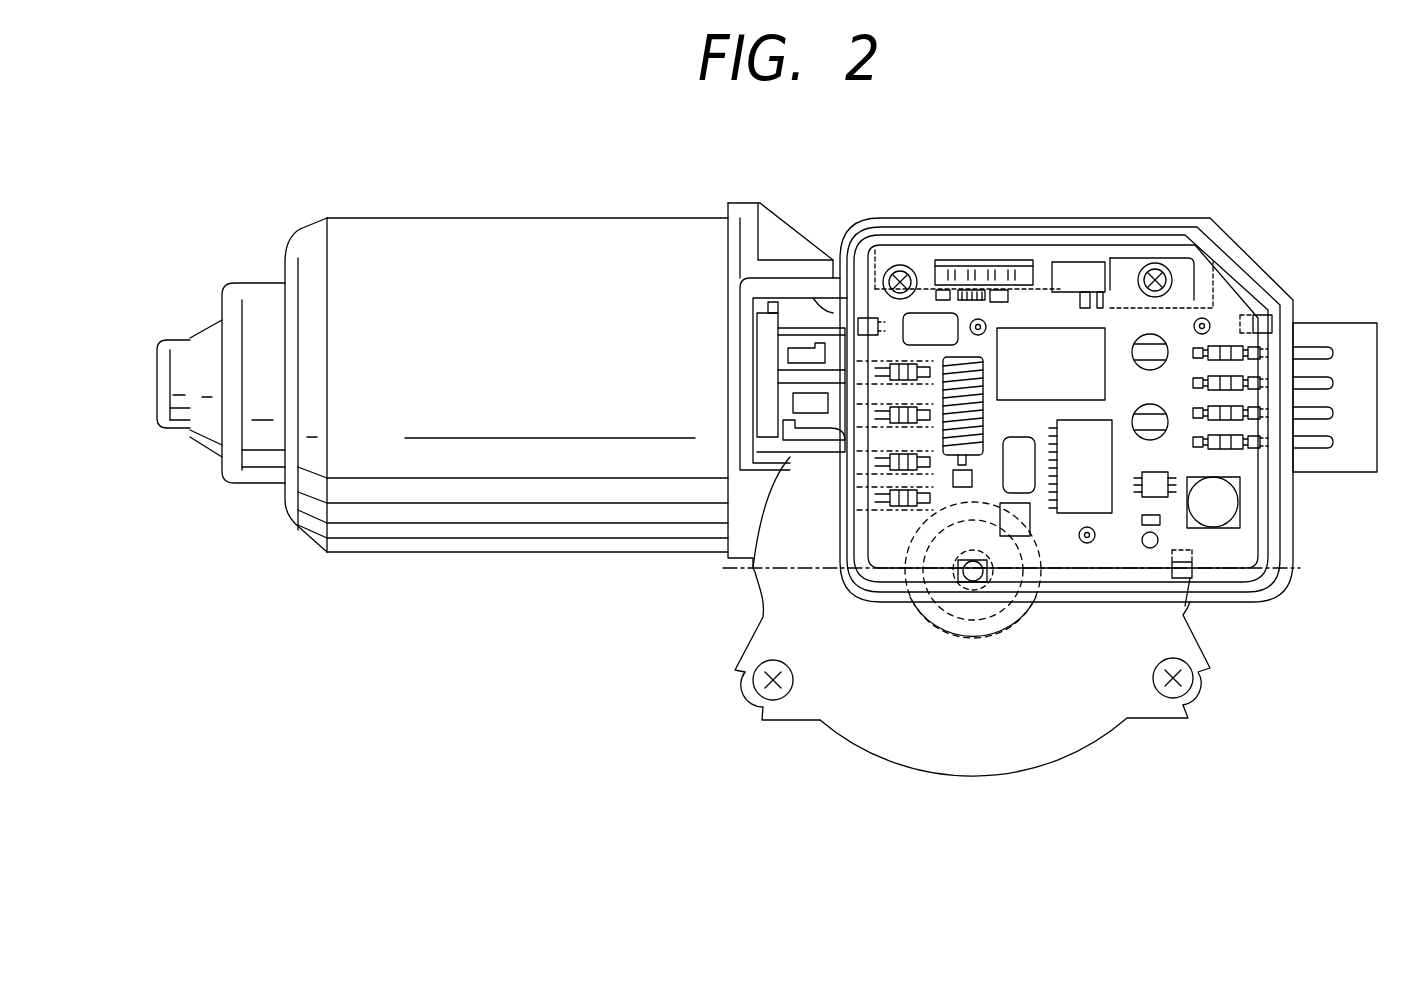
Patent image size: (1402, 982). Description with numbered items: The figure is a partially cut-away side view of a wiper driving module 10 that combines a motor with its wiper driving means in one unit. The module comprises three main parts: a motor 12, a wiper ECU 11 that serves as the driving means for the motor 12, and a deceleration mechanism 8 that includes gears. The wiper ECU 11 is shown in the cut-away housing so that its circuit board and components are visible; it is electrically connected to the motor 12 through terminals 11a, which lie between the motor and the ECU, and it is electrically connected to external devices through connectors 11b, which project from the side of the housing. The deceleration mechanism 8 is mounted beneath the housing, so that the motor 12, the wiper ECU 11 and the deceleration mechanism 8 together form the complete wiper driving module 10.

The wiper driving module 10 is at (1297, 168).
The motor 12 is at (443, 237).
The wiper ECU 11 is at (1130, 215).
The terminals 11a is at (805, 353).
The connectors 11b is at (1348, 463).
The deceleration mechanism 8 is at (873, 735).